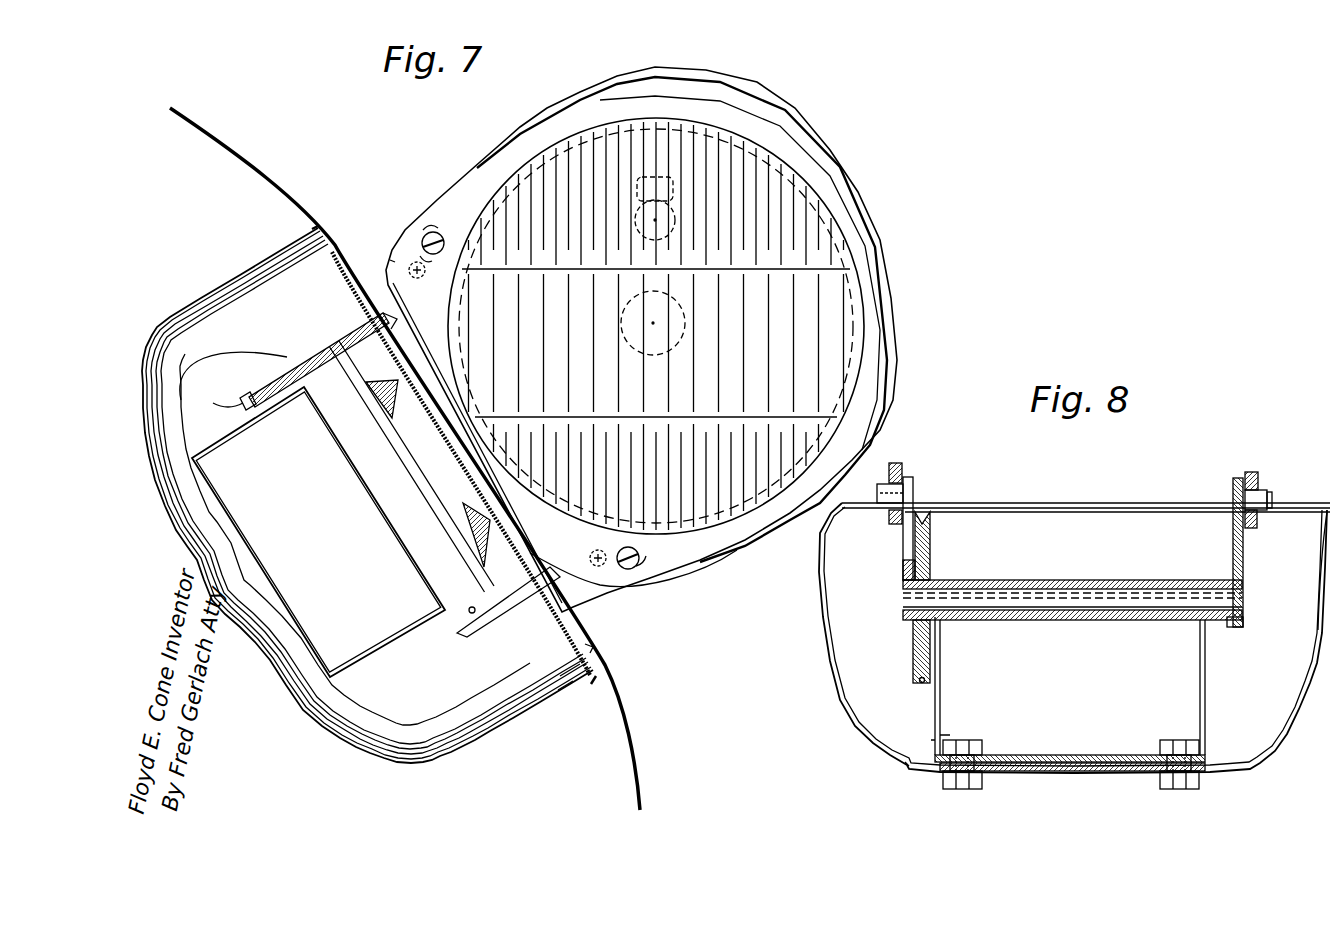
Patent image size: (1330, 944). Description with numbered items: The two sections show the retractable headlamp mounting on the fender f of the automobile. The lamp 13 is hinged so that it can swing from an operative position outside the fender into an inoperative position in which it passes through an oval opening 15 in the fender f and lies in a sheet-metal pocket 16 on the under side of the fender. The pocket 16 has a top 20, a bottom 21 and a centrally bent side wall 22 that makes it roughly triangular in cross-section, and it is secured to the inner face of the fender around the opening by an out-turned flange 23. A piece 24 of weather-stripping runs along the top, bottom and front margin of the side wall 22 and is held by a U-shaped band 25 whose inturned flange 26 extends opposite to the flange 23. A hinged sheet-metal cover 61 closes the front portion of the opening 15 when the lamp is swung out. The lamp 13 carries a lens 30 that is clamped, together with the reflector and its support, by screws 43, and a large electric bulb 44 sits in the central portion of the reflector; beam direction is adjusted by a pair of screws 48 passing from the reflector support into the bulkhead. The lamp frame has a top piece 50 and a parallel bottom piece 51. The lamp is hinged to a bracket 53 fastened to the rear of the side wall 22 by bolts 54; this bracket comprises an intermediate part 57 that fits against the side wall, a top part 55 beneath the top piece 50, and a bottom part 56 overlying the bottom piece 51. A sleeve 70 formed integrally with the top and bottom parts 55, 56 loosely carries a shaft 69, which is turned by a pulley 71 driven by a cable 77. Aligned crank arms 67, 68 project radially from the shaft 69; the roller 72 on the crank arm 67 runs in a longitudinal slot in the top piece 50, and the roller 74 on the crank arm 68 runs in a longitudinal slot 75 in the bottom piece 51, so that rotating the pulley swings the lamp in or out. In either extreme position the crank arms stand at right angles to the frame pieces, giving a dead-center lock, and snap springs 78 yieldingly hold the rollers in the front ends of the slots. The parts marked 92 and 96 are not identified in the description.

In FIG. 7, the fender f is at (318, 200).
In FIG. 7, the lamp 13 is at (893, 304).
In FIG. 7, the opening 15 is at (410, 233).
In FIG. 7, the pocket 16 is at (325, 722).
In FIG. 8, the pocket 16 is at (1020, 772).
In FIG. 7, the top 20 is at (246, 285).
In FIG. 8, the top 20 is at (822, 650).
In FIG. 7, the bottom 21 is at (505, 718).
In FIG. 8, the bottom 21 is at (1300, 698).
In FIG. 7, the side wall 22 is at (282, 667).
In FIG. 8, the side wall 22 is at (1062, 770).
In FIG. 7, the out-turn flange 23 is at (320, 225).
In FIG. 7, the piece of weather-stripping 24 is at (596, 645).
In FIG. 7, the U-shaped sheet metal band 25 is at (568, 680).
In FIG. 7, the inturned flange 26 is at (330, 236).
In FIG. 7, the lens 30 is at (800, 230).
In FIG. 7, the screws 43 is at (634, 568).
In FIG. 7, the large electric bulb 44 is at (653, 356).
In FIG. 7, the screws 48 is at (604, 568).
In FIG. 8, the top piece 50 is at (902, 466).
In FIG. 8, the bottom piece 51 is at (1252, 470).
In FIG. 7, the bracket 53 is at (381, 648).
In FIG. 8, the bracket 53 is at (944, 686).
In FIG. 8, the bolts 54 is at (978, 742).
In FIG. 7, the top part 55 is at (378, 392).
In FIG. 8, the top part 55 is at (942, 708).
In FIG. 7, the bottom part 56 is at (486, 552).
In FIG. 8, the bottom part 56 is at (1205, 706).
In FIG. 8, the intermediate part 57 is at (1092, 754).
In FIG. 7, the sheet metal cover 61 is at (538, 556).
In FIG. 7, the crank arm 67 is at (322, 347).
In FIG. 8, the crank arm 67 is at (905, 545).
In FIG. 7, the crank arm 68 is at (493, 615).
In FIG. 8, the crank arm 68 is at (1244, 550).
In FIG. 8, the shaft 69 is at (1110, 580).
In FIG. 7, the sleeve 70 is at (422, 560).
In FIG. 8, the sleeve 70 is at (1184, 578).
In FIG. 7, the pulley 71 is at (252, 402).
In FIG. 8, the pulley 71 is at (912, 660).
In FIG. 8, the roller 72 is at (888, 508).
In FIG. 8, the roller 74 is at (1268, 492).
In FIG. 8, the longitudinal slot 75 is at (1262, 486).
In FIG. 8, the cable 77 is at (920, 684).
In FIG. 8, the snap springs 78 is at (886, 480).
In FIG. 7, the bezel ring 92 is at (878, 368).
In FIG. 7, the bulb 96 is at (668, 232).